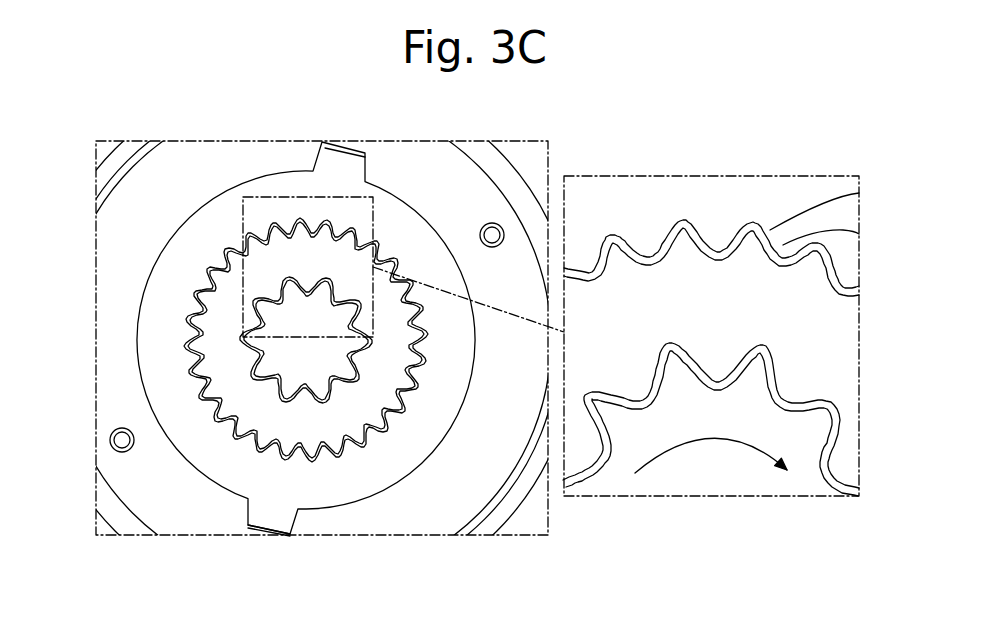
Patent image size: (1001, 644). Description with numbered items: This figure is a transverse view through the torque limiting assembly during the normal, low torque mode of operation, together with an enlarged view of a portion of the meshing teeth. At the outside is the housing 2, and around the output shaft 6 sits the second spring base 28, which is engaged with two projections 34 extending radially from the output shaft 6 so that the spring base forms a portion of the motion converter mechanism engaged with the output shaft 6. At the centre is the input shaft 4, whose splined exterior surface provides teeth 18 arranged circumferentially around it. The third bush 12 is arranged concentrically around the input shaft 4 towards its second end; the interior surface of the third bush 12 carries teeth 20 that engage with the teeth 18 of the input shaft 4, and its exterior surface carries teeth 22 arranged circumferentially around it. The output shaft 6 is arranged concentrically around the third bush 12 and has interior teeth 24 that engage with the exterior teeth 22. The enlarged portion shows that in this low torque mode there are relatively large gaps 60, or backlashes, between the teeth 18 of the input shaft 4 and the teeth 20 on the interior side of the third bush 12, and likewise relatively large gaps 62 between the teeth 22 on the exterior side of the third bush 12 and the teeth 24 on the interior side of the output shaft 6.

The housing 2 is at (130, 150).
The input shaft 4 is at (282, 315).
The output shaft 6 is at (177, 405).
The third bush 12 is at (223, 372).
The teeth 18 is at (742, 373).
The teeth 20 is at (793, 385).
The teeth 22 is at (745, 247).
The teeth 24 is at (859, 234).
The second spring base 28 is at (115, 277).
The projections 34 is at (268, 521).
The gaps 60 is at (768, 365).
The gaps 62 is at (859, 193).